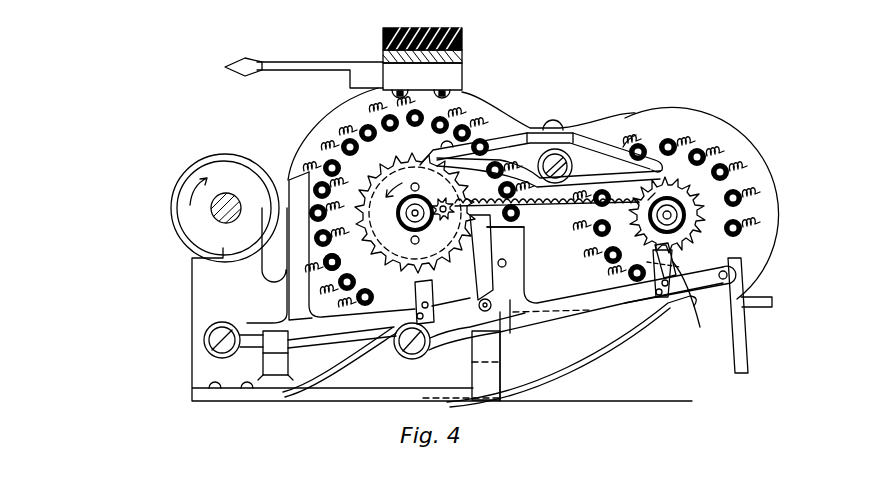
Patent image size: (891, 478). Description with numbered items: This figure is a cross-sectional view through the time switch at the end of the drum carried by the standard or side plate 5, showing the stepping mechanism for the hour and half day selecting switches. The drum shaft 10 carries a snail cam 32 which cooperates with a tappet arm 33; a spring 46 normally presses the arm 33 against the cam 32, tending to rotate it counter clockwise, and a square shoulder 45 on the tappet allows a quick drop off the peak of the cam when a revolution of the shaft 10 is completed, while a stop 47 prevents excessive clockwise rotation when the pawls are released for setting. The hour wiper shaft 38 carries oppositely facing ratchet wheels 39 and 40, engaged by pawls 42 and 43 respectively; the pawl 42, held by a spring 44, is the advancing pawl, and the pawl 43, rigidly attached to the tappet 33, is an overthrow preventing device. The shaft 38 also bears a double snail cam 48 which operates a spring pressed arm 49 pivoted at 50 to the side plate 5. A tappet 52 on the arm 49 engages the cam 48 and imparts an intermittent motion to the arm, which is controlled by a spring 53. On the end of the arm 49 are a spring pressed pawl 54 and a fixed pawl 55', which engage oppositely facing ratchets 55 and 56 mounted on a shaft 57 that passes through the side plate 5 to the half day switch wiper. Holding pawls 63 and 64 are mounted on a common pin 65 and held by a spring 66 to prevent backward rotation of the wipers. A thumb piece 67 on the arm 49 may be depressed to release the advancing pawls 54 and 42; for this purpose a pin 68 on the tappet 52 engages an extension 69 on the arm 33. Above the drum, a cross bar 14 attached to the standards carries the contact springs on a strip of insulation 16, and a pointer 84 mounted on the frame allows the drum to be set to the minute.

The standard 5 is at (710, 123).
The shaft 10 is at (222, 212).
The cross bar 14 is at (462, 57).
The strip of insulation 16 is at (452, 37).
The snail cam 32 is at (172, 202).
The tappet arm 33 is at (287, 320).
The shaft 38 is at (412, 215).
The ratchet wheel 39 is at (531, 202).
The ratchet wheel 40 is at (406, 299).
The pawl 42 is at (637, 218).
The pawl 43 is at (403, 340).
The spring 44 is at (467, 263).
The square shoulder 45 is at (293, 192).
The spring 46 is at (320, 385).
The stop 47 is at (277, 360).
The double snail cam 48 is at (348, 261).
The spring pressed arm 49 is at (582, 300).
The pivot 50 is at (418, 350).
The tappet 52 is at (505, 226).
The spring 53 is at (617, 355).
The spring pressed pawl 54 is at (723, 245).
The ratchet 55 is at (717, 202).
The fixed pawl 55' is at (700, 302).
The ratchet 56 is at (705, 197).
The shaft 57 is at (670, 215).
The holding pawl 63 is at (513, 157).
The holding pawl 64 is at (593, 157).
The common pin 65 is at (565, 148).
The spring 66 is at (623, 147).
The thumb piece 67 is at (773, 302).
The pin 68 is at (506, 263).
The extension 69 is at (510, 333).
The pointer 84 is at (252, 58).